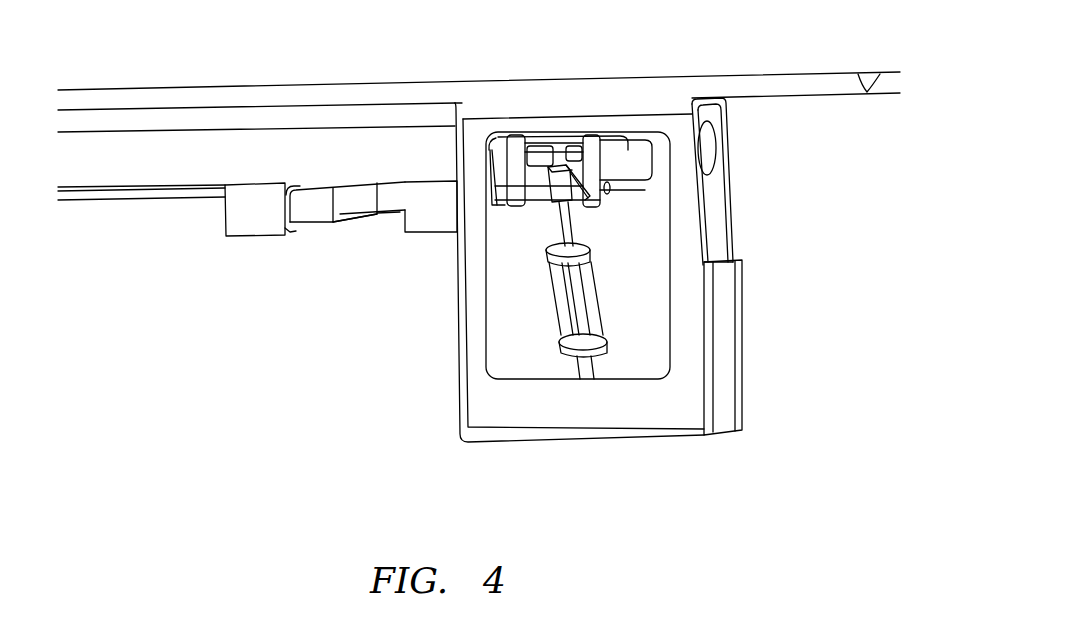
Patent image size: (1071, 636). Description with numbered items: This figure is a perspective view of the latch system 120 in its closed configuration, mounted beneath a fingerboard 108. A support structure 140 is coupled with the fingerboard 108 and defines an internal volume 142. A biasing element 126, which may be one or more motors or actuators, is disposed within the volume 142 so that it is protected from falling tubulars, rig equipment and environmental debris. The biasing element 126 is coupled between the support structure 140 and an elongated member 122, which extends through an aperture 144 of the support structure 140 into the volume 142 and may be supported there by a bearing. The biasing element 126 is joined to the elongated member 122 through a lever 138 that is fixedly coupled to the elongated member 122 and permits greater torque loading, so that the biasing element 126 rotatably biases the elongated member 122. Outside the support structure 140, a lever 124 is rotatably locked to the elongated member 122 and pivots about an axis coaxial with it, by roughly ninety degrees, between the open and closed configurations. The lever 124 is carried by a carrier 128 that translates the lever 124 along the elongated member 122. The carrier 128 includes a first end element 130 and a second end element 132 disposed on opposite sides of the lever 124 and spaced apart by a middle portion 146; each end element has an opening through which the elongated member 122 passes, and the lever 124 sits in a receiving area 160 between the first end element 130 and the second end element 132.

The fingerboard 108 is at (700, 78).
The latch system 120 is at (292, 375).
The elongated member 122 is at (498, 204).
The lever 124 is at (312, 212).
The biasing element 126 is at (609, 311).
The carrier 128 is at (263, 238).
The first end element 130 is at (270, 223).
The second end element 132 is at (448, 223).
The lever 138 is at (580, 200).
The support structure 140 is at (640, 440).
The volume 142 is at (545, 335).
The aperture 144 is at (497, 172).
The middle portion 146 is at (288, 186).
The receiving area 160 is at (375, 223).